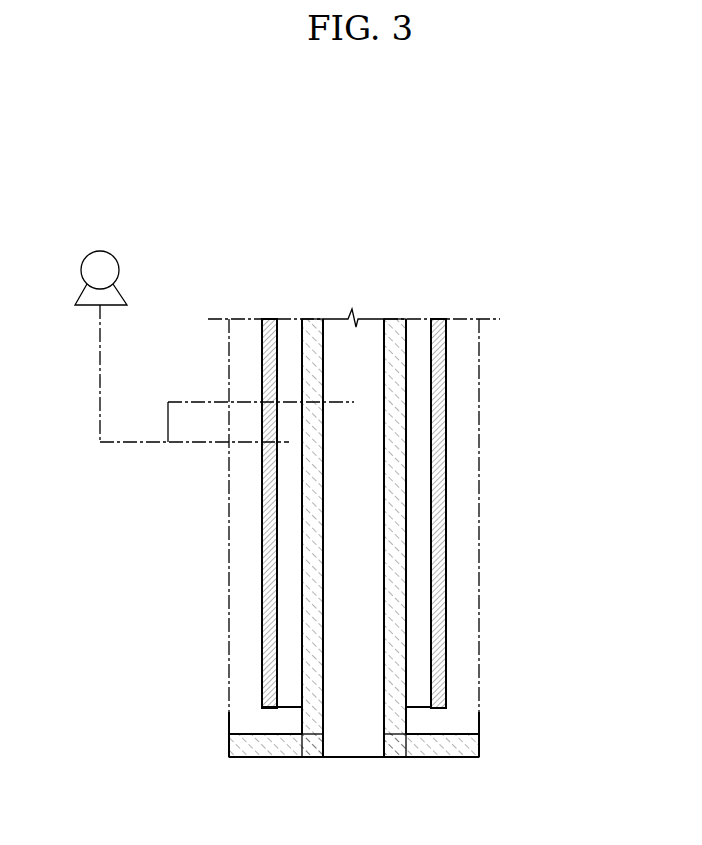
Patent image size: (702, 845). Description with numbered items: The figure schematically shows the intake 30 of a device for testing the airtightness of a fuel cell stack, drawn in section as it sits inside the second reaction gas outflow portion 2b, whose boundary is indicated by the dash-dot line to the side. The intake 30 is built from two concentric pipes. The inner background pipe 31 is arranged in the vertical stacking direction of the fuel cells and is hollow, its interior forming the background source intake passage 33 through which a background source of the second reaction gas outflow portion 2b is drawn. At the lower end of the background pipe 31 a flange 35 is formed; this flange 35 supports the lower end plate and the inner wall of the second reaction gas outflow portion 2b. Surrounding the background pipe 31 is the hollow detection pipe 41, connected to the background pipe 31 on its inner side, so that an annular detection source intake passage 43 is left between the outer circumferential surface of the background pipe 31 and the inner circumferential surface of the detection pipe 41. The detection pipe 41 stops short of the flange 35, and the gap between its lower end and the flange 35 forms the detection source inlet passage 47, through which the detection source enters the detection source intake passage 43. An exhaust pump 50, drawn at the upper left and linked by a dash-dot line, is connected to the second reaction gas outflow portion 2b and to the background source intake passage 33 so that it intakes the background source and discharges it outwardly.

The intake 30 is at (346, 133).
The background pipe 31 is at (412, 436).
The background source intake passage 33 is at (363, 720).
The flange 35 is at (447, 745).
The detection pipe 41 is at (450, 612).
The detection source intake passage 43 is at (291, 643).
The detection source inlet passage 47 is at (438, 712).
The second reaction gas outflow portion 2b is at (480, 525).
The exhaust pump 50 is at (81, 270).